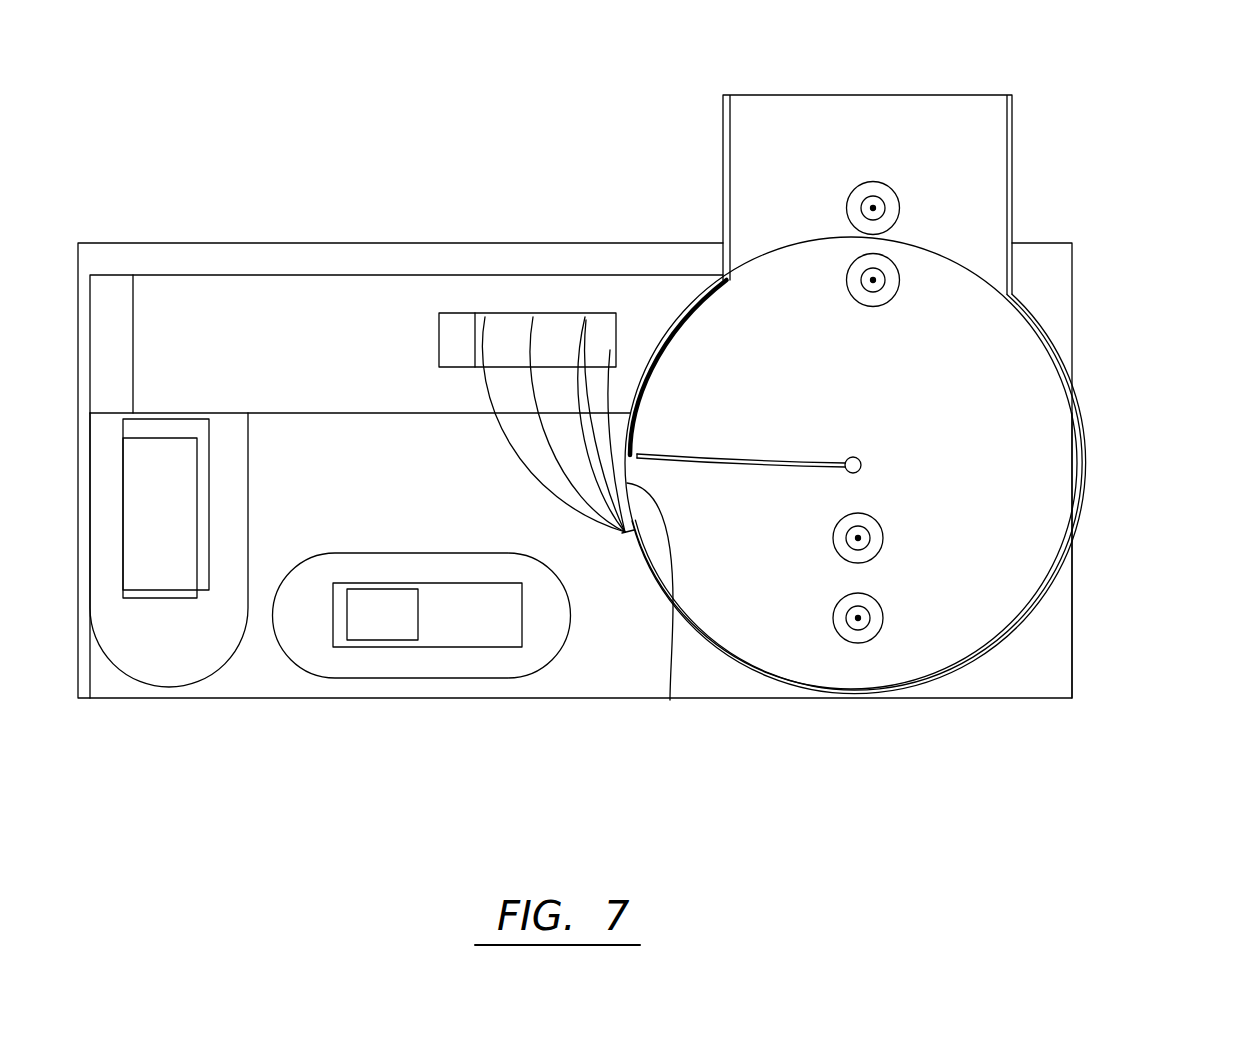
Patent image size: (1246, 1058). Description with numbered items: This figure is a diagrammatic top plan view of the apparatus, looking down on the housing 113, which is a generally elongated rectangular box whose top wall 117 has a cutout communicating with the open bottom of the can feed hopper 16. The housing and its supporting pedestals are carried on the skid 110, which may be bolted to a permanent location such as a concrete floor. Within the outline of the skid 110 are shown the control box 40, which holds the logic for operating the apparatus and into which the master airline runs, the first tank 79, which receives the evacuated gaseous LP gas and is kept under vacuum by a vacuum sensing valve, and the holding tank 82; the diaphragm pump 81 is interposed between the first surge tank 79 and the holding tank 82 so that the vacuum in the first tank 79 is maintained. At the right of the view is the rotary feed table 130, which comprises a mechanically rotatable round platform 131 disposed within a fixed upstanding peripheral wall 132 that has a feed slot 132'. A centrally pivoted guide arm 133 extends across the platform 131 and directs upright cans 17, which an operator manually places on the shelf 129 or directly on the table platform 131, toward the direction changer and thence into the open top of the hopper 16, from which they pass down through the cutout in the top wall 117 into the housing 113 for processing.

The housing 113 is at (203, 245).
The top wall 117 is at (315, 357).
The skid 110 is at (430, 493).
The first tank 79 is at (185, 651).
The control box 40 is at (178, 522).
The holding tank 82 is at (510, 662).
The diaphragm pump 81 is at (400, 634).
The can feed hopper 16 is at (457, 332).
The shelf 129 is at (908, 147).
The round platform 131 is at (858, 390).
The rotary feed table 130 is at (1098, 418).
The peripheral wall 132 is at (859, 526).
The feed slot 132' is at (686, 622).
The guide arm 133 is at (787, 470).
The cans 17 is at (893, 272).